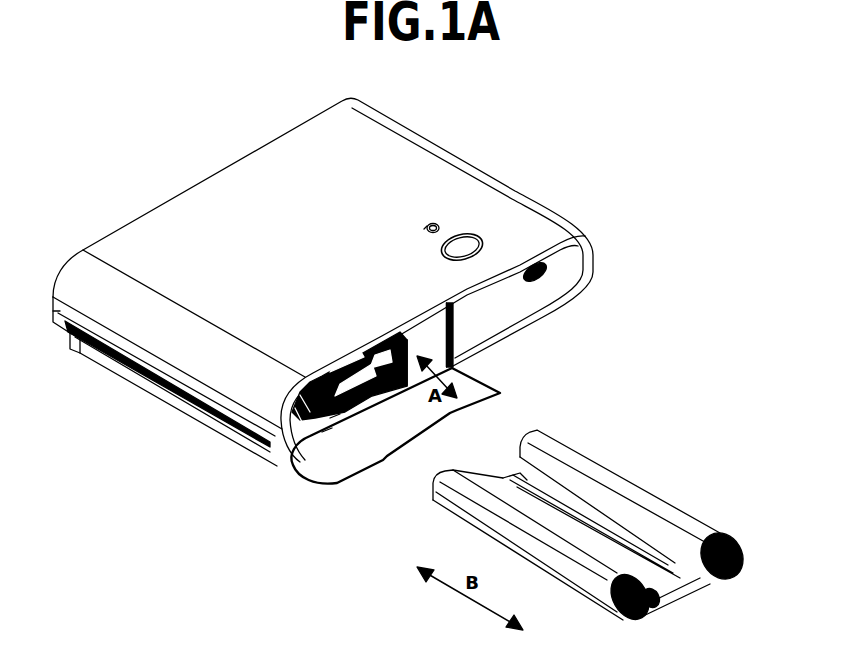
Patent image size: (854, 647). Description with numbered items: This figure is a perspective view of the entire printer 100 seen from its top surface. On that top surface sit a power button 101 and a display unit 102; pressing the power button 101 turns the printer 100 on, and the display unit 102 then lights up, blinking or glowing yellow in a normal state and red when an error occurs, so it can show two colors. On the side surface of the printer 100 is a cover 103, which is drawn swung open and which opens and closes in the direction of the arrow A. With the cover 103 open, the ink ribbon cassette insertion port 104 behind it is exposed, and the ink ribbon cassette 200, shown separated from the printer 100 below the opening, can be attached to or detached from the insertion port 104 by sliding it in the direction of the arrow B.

The printer 100 is at (267, 137).
The power button 101 is at (466, 242).
The display unit 102 is at (433, 223).
The cover 103 is at (330, 468).
The ink ribbon cassette insertion port 104 is at (408, 341).
The ink ribbon cassette 200 is at (660, 513).